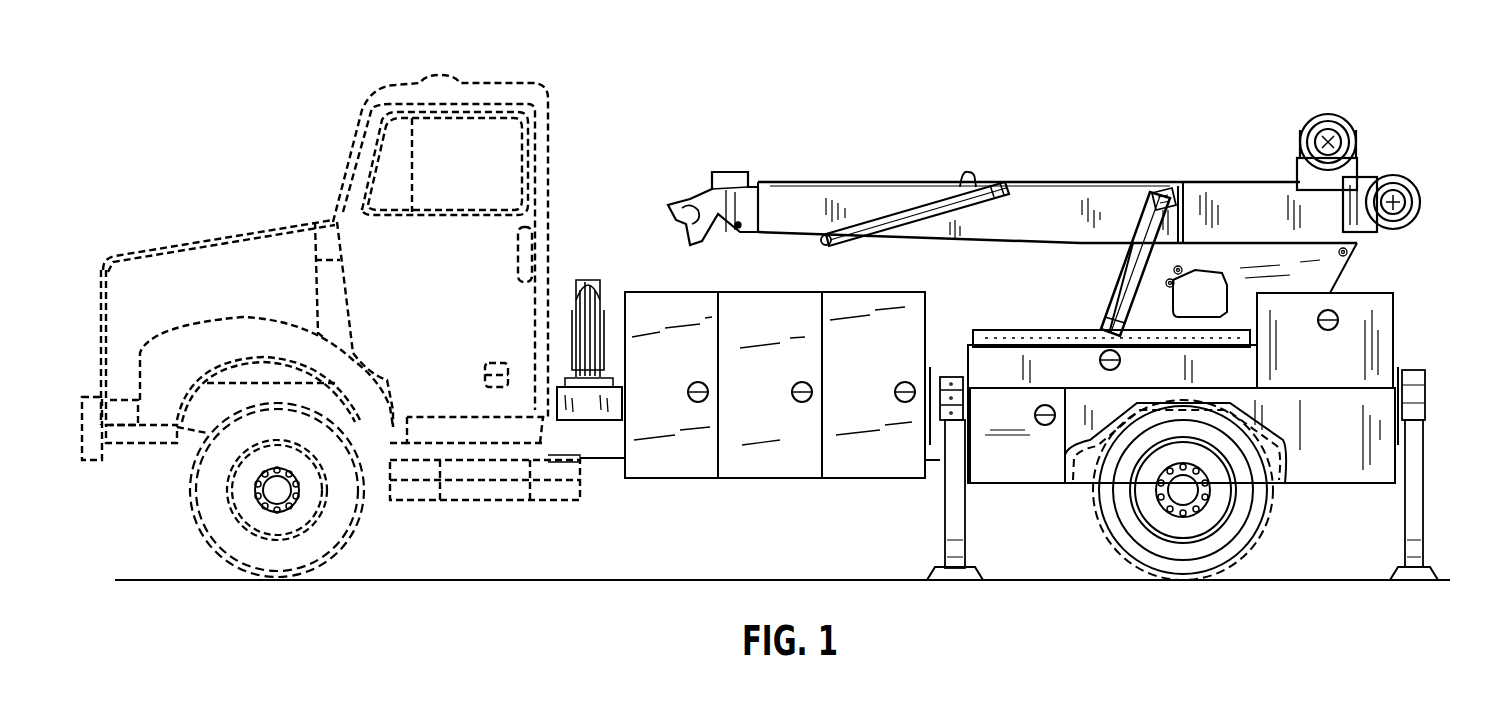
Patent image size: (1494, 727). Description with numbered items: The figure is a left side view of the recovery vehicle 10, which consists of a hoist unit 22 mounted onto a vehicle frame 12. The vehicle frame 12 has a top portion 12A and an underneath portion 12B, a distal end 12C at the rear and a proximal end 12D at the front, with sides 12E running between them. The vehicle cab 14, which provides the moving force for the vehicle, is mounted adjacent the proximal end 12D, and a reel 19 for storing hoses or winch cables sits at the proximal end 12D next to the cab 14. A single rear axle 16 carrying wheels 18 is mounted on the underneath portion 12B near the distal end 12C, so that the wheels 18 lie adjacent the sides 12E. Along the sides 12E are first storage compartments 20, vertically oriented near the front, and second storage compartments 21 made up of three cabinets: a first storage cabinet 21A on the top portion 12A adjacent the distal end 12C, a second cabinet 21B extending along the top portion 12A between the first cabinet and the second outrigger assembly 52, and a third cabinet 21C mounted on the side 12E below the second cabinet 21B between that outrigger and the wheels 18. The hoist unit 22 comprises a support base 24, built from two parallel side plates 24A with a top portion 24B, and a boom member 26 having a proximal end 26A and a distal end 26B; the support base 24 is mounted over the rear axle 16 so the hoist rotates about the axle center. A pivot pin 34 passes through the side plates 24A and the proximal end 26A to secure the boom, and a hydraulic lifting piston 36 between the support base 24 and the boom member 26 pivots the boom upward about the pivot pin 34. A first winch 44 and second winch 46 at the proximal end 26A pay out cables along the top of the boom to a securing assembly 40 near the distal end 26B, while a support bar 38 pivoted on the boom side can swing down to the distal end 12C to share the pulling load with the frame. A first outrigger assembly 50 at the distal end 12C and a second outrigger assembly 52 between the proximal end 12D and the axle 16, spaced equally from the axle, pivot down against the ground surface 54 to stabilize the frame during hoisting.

The recovery vehicle 10 is at (757, 118).
The vehicle frame 12 is at (614, 452).
The top portion 12A is at (590, 412).
The underneath portion 12B is at (937, 465).
The distal end 12C is at (1400, 375).
The proximal end 12D is at (596, 452).
The sides 12E is at (975, 485).
The vehicle cab 14 is at (232, 246).
The rear axle 16 is at (1160, 475).
The wheels 18 is at (1255, 518).
The reel 19 is at (586, 285).
The first storage compartments 20 is at (787, 462).
The second storage compartments 21 is at (1393, 316).
The first storage cabinet 21A is at (1325, 336).
The second cabinet 21B is at (1107, 366).
The third cabinet 21C is at (1116, 435).
The hoist unit 22 is at (1105, 200).
The support base 24 is at (1327, 283).
The side plates 24A is at (1185, 255).
The top portion 24B is at (1237, 250).
The boom member 26 is at (866, 197).
The proximal end 26A is at (1318, 215).
The distal end 26B is at (784, 198).
The pivot pin 34 is at (1422, 202).
The hydraulic lifting piston 36 is at (1110, 305).
The support bars 38 is at (946, 198).
The securing assembly 40 is at (697, 170).
The first winch 44 is at (1340, 112).
The second winch 46 is at (1393, 174).
The first outrigger assembly 50 is at (1410, 508).
The second outrigger assembly 52 is at (962, 498).
The ground surface 54 is at (474, 570).